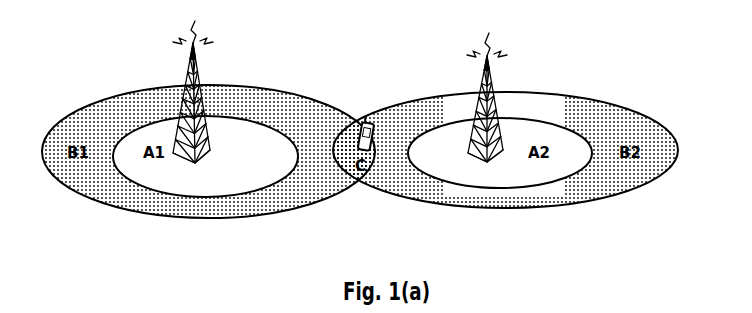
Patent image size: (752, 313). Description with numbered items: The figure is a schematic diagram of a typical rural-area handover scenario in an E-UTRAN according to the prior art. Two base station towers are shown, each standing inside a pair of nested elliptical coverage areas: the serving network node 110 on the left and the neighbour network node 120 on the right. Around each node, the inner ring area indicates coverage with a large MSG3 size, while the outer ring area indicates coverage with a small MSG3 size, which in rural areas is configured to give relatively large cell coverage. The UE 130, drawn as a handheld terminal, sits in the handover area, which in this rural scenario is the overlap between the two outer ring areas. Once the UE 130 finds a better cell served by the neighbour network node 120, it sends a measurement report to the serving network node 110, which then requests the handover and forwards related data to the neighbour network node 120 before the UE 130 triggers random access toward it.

The serving network node 110 is at (200, 75).
The neighbour network node 120 is at (495, 88).
The UE 130 is at (364, 118).